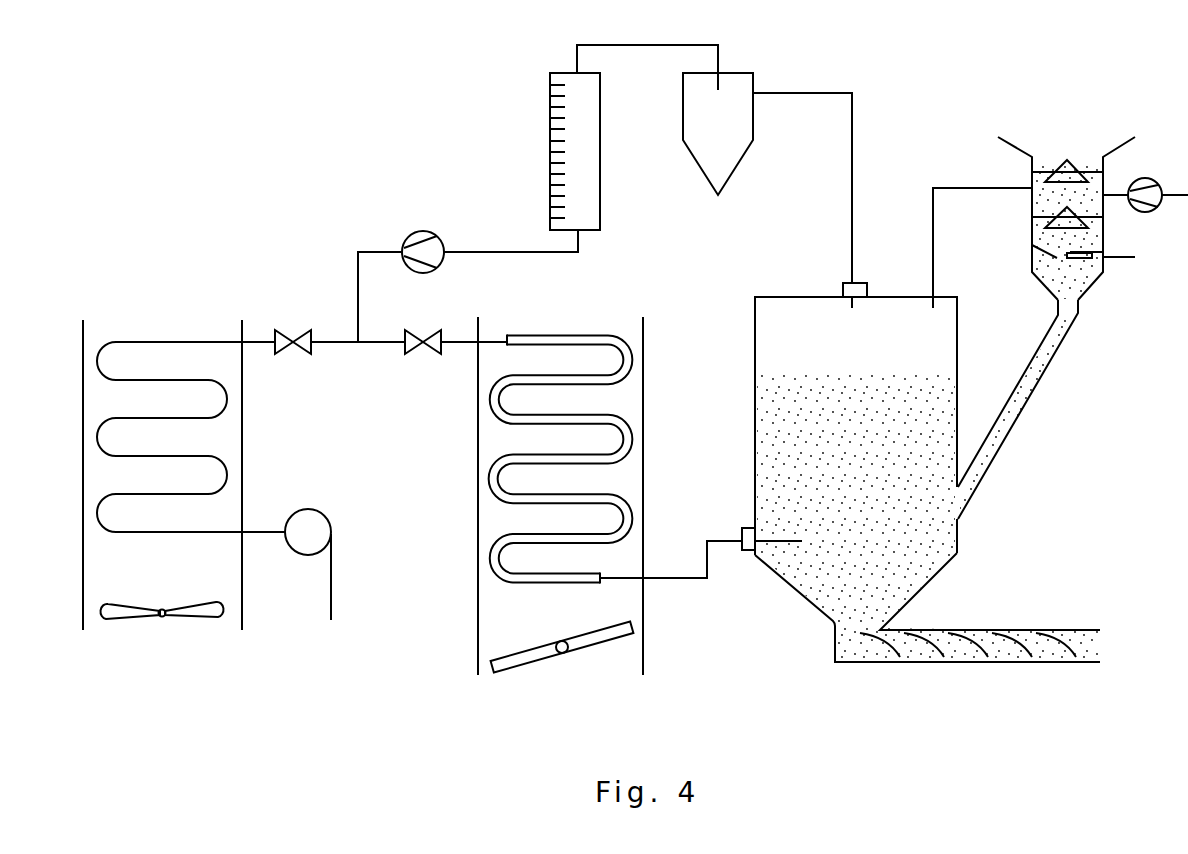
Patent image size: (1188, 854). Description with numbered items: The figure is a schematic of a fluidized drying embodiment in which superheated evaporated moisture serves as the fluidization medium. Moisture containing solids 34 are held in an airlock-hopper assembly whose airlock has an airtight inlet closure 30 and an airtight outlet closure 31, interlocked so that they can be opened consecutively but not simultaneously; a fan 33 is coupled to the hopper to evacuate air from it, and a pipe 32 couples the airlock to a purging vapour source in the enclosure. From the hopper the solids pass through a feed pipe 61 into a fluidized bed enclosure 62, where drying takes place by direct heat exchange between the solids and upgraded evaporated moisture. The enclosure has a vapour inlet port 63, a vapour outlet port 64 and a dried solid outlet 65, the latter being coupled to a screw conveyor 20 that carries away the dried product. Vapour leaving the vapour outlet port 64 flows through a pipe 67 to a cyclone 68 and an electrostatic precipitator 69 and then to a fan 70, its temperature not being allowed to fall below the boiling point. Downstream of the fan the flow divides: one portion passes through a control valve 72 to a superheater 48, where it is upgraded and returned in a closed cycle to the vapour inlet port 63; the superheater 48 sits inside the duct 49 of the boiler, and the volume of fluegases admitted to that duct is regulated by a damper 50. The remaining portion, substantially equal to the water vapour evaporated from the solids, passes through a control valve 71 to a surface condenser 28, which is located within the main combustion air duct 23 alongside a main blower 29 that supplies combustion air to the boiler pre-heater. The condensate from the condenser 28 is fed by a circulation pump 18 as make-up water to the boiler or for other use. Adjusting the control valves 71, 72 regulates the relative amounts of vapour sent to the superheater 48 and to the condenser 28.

The circulation pump 18 is at (323, 522).
The screw conveyor 20 is at (958, 652).
The main combustion air duct 23 is at (95, 556).
The surface condenser 28 is at (127, 340).
The main blower 29 is at (196, 618).
The inlet closure 30 is at (1067, 172).
The outlet closure 31 is at (1077, 223).
The pipe 32 is at (935, 267).
The fan 33 is at (1150, 185).
The moisture containing solids 34 is at (1040, 157).
The superheater 48 is at (627, 433).
The duct 49 is at (630, 388).
The damper 50 is at (587, 641).
The feed pipe 61 is at (988, 445).
The fluidized bed enclosure 62 is at (790, 305).
The vapour inlet port 63 is at (747, 533).
The vapour outlet port 64 is at (847, 285).
The dried solid outlet 65 is at (850, 618).
The pipe 67 is at (855, 124).
The cyclone 68 is at (733, 85).
The electrostatic precipitator 69 is at (550, 101).
The fan 70 is at (423, 229).
The control valve 71 is at (287, 330).
The control valve 72 is at (412, 332).